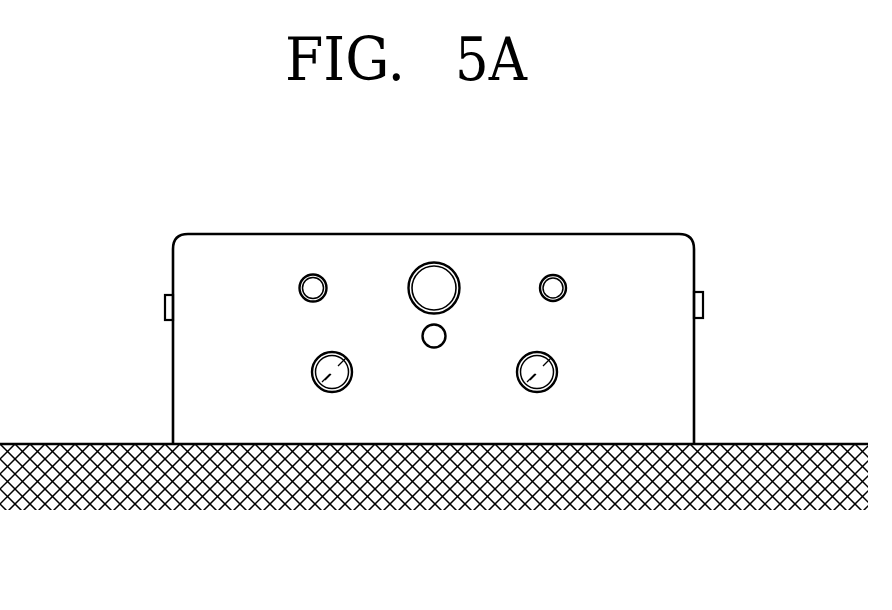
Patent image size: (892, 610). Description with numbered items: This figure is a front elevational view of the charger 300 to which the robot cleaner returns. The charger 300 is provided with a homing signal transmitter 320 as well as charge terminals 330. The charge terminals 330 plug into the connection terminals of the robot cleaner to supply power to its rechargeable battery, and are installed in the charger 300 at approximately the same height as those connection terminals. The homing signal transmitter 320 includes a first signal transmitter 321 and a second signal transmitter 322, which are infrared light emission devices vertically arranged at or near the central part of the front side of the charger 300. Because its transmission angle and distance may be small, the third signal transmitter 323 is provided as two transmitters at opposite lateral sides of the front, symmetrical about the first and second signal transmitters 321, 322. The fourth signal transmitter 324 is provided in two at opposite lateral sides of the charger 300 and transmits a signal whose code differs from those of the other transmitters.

The charger 300 is at (676, 238).
The homing signal transmitter 320 is at (398, 262).
The first signal transmitter 321 is at (434, 270).
The second signal transmitter 322 is at (439, 333).
The third signal transmitter 323 is at (309, 287).
The fourth signal transmitter 324 is at (165, 302).
The charge terminals 330 is at (523, 386).